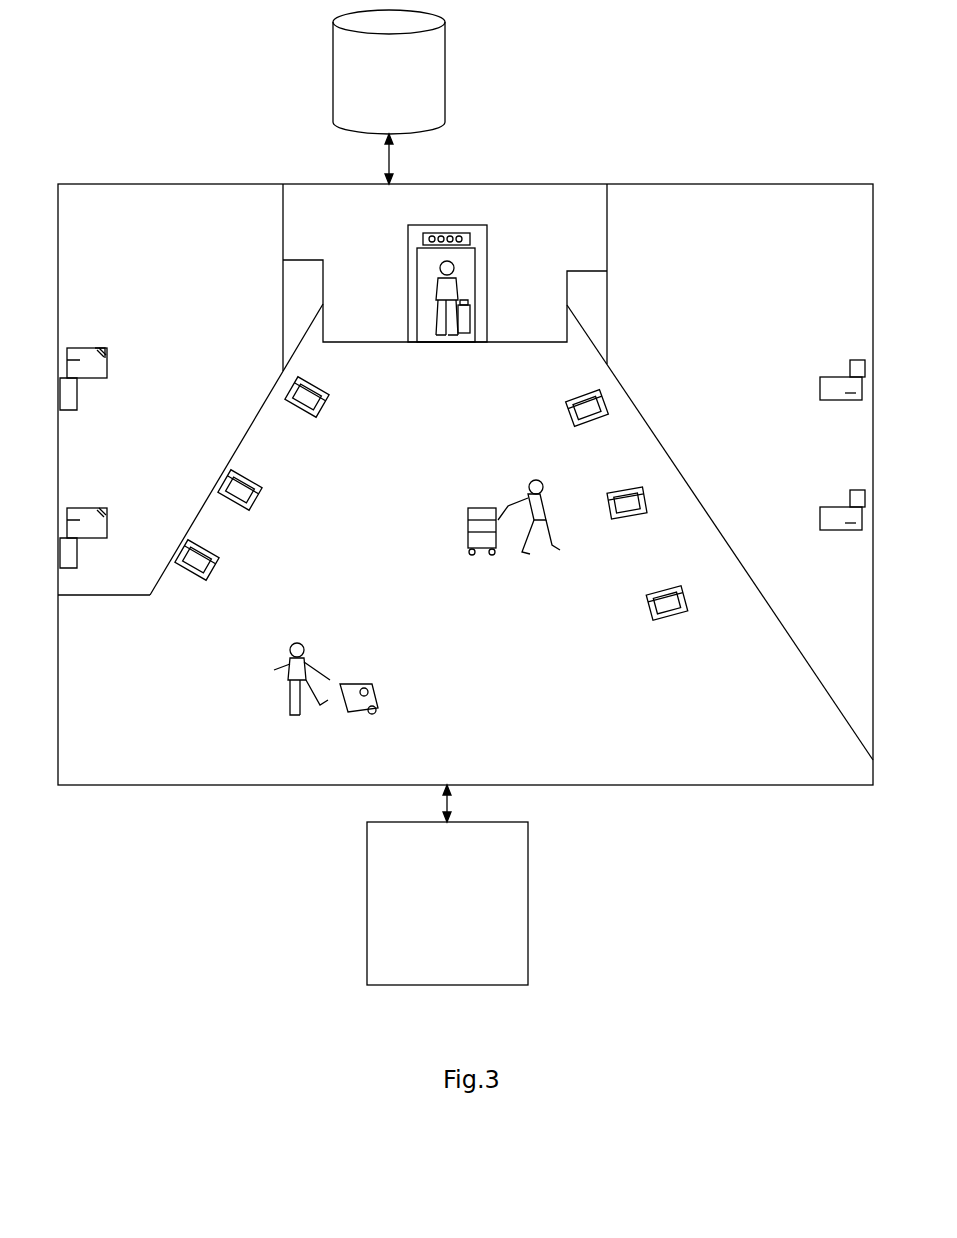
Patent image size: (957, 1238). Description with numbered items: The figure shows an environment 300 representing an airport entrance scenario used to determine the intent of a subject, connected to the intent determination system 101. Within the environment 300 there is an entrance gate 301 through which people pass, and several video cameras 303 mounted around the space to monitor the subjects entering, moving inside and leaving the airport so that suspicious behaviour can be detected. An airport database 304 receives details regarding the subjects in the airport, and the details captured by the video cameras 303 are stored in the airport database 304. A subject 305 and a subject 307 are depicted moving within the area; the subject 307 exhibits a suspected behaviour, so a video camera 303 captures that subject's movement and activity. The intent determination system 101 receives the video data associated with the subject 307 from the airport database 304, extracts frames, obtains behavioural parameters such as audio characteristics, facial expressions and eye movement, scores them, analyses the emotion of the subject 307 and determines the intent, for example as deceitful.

The environment 300 is at (689, 78).
The entrance gate 301 is at (450, 224).
The video cameras 303 is at (105, 350).
The airport database 304 is at (389, 97).
The subject 305 is at (530, 478).
The subject 307 is at (290, 395).
The intent determination system 101 is at (447, 885).